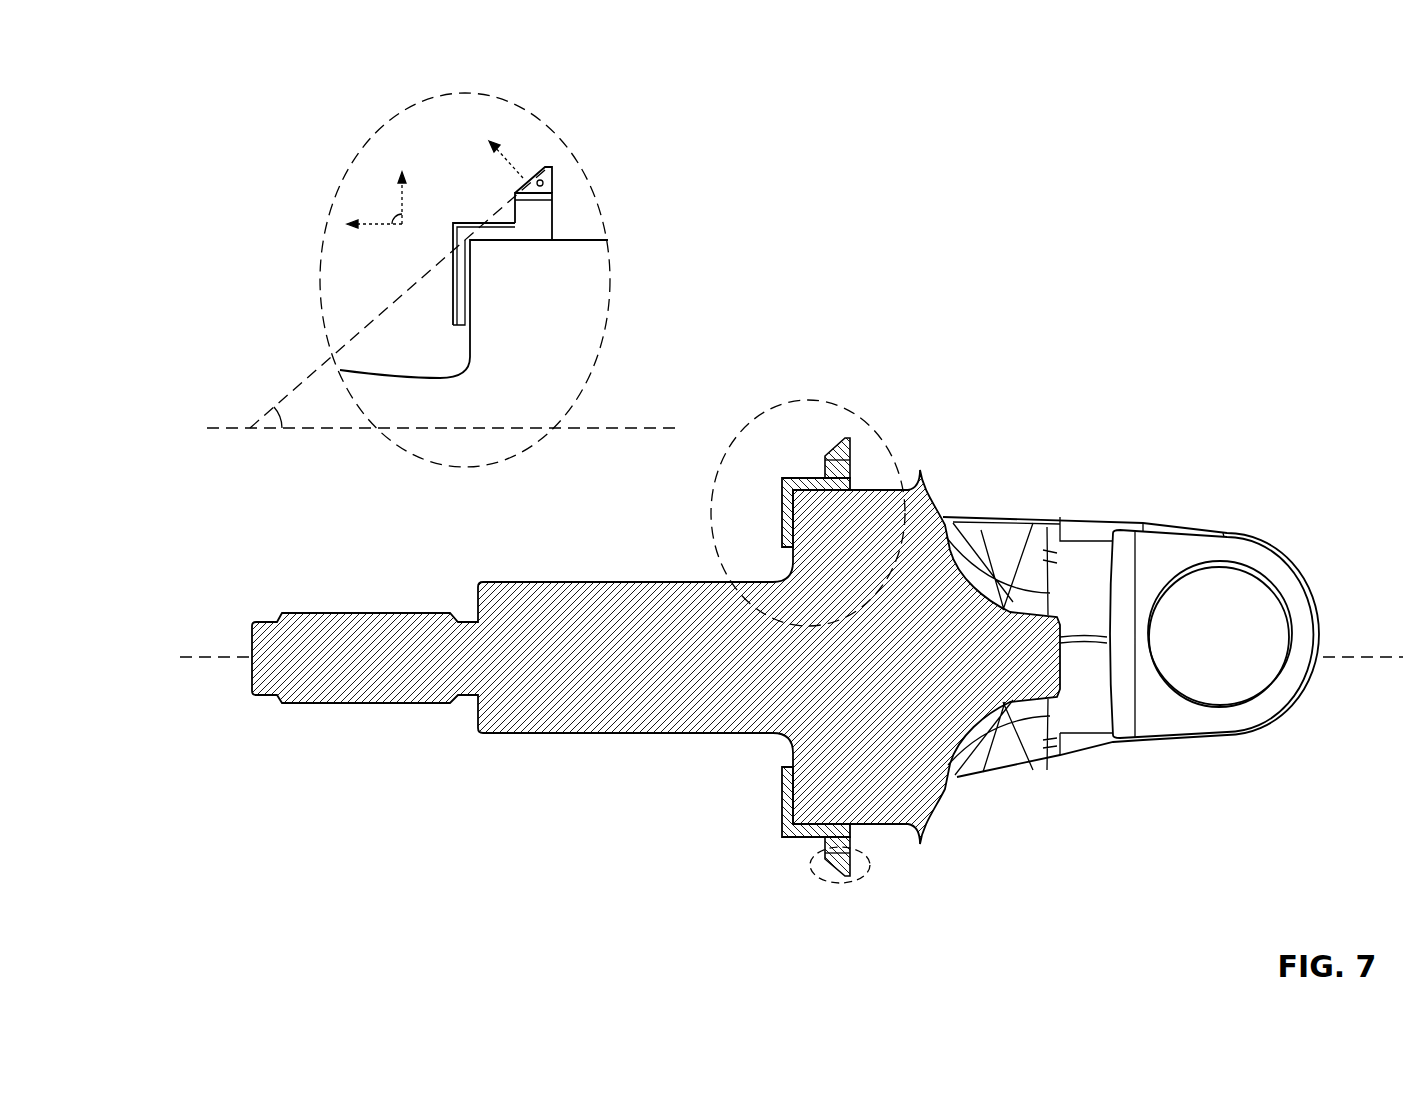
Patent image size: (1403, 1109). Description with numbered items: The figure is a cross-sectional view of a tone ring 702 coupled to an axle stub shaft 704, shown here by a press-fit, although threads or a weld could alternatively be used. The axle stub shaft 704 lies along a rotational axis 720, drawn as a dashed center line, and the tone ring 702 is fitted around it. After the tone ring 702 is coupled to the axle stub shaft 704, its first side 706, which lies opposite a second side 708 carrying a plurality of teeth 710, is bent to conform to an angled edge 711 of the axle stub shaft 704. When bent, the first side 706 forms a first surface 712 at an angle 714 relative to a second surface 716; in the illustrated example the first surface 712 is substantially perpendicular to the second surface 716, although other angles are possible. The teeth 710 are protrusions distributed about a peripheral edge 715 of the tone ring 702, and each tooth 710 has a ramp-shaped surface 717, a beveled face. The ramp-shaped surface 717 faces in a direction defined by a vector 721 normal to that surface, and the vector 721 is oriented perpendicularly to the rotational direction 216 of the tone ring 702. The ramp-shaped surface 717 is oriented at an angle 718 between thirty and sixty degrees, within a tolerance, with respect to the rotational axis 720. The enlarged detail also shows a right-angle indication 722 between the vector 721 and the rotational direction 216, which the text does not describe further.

The rotational direction 216 is at (554, 194).
The tone ring 702 is at (782, 813).
The axle stub shaft 704 is at (700, 733).
The first side 706 is at (791, 548).
The second side 708 is at (853, 479).
The teeth 710 is at (835, 883).
The angled edge 711 is at (793, 478).
The first surface 712 is at (453, 300).
The angle 714 is at (471, 242).
The peripheral edge 715 is at (554, 175).
The second surface 716 is at (489, 218).
The ramp-shaped surface 717 is at (528, 190).
The angle 718 is at (282, 427).
The rotational axis 720 is at (235, 655).
The vector 721 is at (520, 173).
The right angle 722 is at (400, 214).